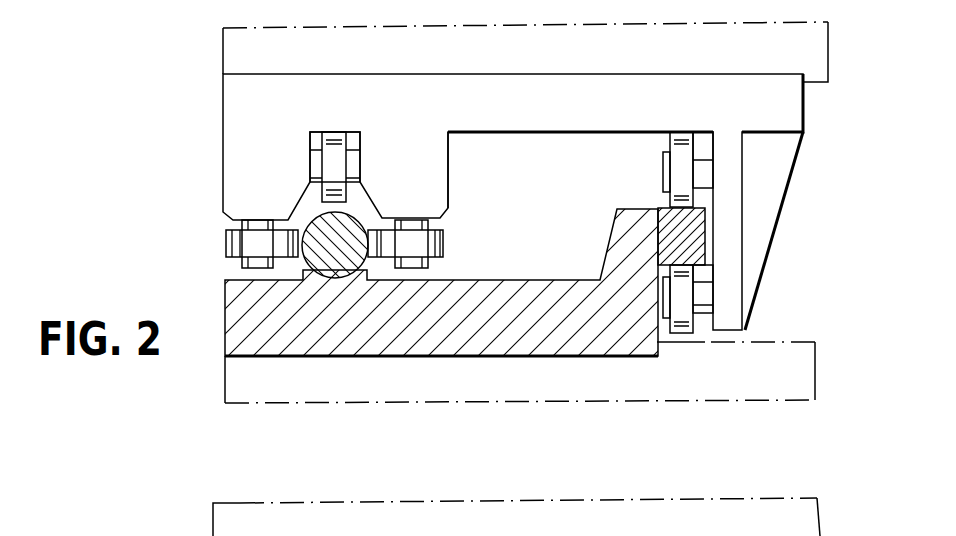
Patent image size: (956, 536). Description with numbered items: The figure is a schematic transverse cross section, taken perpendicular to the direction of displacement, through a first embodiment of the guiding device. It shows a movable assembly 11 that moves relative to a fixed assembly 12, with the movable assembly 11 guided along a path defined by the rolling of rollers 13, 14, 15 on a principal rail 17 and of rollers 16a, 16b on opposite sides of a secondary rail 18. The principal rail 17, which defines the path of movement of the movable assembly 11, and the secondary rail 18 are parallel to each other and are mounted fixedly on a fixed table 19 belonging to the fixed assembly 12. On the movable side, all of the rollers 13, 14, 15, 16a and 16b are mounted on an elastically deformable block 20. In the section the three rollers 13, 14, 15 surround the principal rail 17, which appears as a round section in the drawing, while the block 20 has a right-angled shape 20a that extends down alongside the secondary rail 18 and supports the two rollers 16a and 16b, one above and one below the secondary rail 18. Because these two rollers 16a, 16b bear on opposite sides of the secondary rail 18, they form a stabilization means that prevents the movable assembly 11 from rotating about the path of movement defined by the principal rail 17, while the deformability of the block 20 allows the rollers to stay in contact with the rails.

The movable assembly 11 is at (475, 145).
The fixed assembly 12 is at (533, 270).
The roller 13 is at (225, 245).
The roller 14 is at (340, 131).
The roller 15 is at (443, 238).
The roller 16a is at (672, 143).
The roller 16b is at (683, 328).
The principal rail 17 is at (340, 268).
The secondary rail 18 is at (688, 238).
The fixed table 19 is at (587, 340).
The elastically deformable block 20 is at (247, 121).
The right-angled shape 20a is at (728, 285).